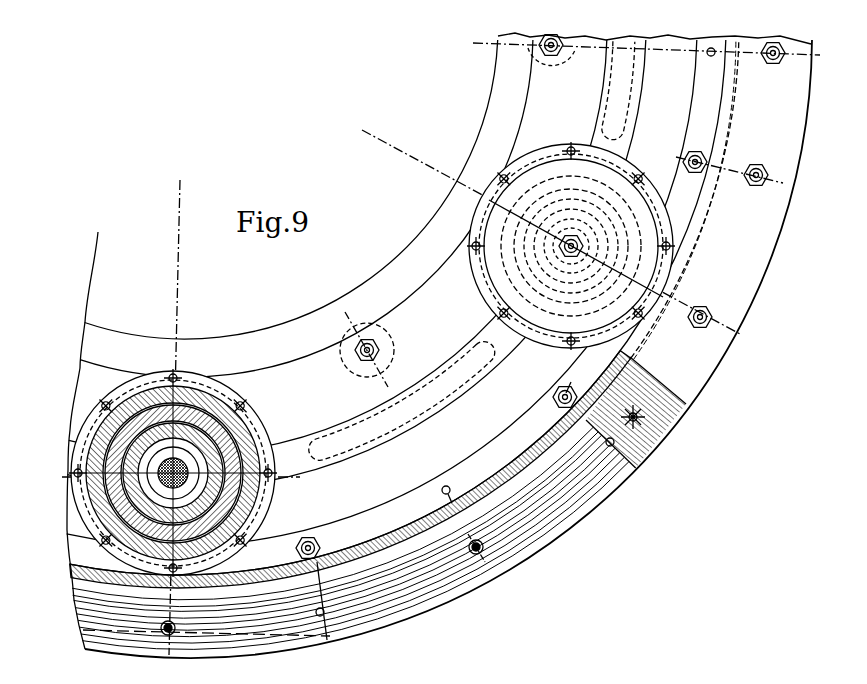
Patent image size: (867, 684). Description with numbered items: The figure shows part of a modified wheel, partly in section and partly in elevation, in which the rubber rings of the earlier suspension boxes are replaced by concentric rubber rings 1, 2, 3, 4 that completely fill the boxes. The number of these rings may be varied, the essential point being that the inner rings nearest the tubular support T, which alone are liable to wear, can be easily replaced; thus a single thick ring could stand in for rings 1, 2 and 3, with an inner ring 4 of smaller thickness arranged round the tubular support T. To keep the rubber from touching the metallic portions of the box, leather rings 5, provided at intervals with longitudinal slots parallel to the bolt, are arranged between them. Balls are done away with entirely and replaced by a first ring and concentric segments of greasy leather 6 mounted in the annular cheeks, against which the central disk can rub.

The concentric rubber ring 1 is at (248, 418).
The concentric rubber ring 2 is at (250, 436).
The concentric rubber ring 3 is at (258, 454).
The inner rubber ring 4 is at (262, 470).
The leather rings 5 is at (253, 506).
The concentric segments of greasy leather 6 is at (369, 293).
The tubular support T is at (215, 402).